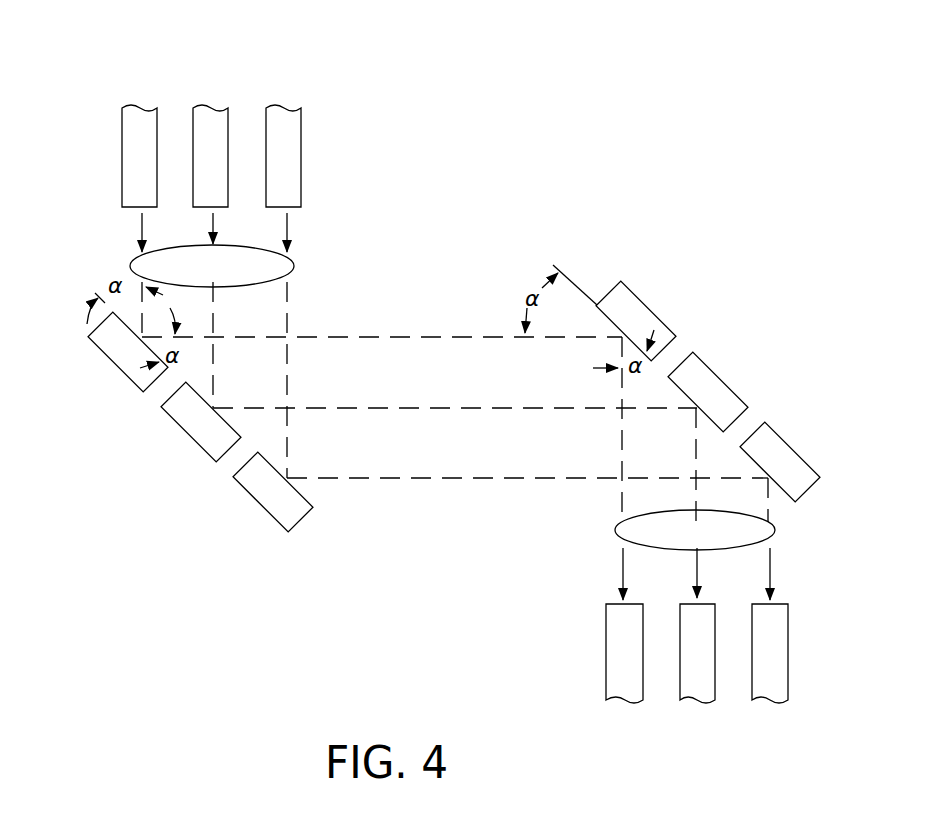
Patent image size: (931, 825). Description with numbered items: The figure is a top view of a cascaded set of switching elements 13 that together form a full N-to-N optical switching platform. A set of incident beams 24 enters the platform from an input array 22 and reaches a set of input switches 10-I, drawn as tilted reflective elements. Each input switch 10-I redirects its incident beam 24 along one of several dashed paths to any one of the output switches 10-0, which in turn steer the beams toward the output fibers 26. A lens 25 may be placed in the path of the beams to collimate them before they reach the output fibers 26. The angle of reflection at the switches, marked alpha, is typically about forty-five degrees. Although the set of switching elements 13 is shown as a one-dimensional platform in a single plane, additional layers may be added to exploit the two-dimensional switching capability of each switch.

The cascaded set of switching elements 13 is at (470, 184).
The input optical beams 22 is at (292, 90).
The incident beams 24 is at (293, 262).
The input switches 10-I is at (232, 490).
The output switches 10-0 is at (787, 430).
The output lens 25 is at (775, 530).
The output fibers 26 is at (780, 716).